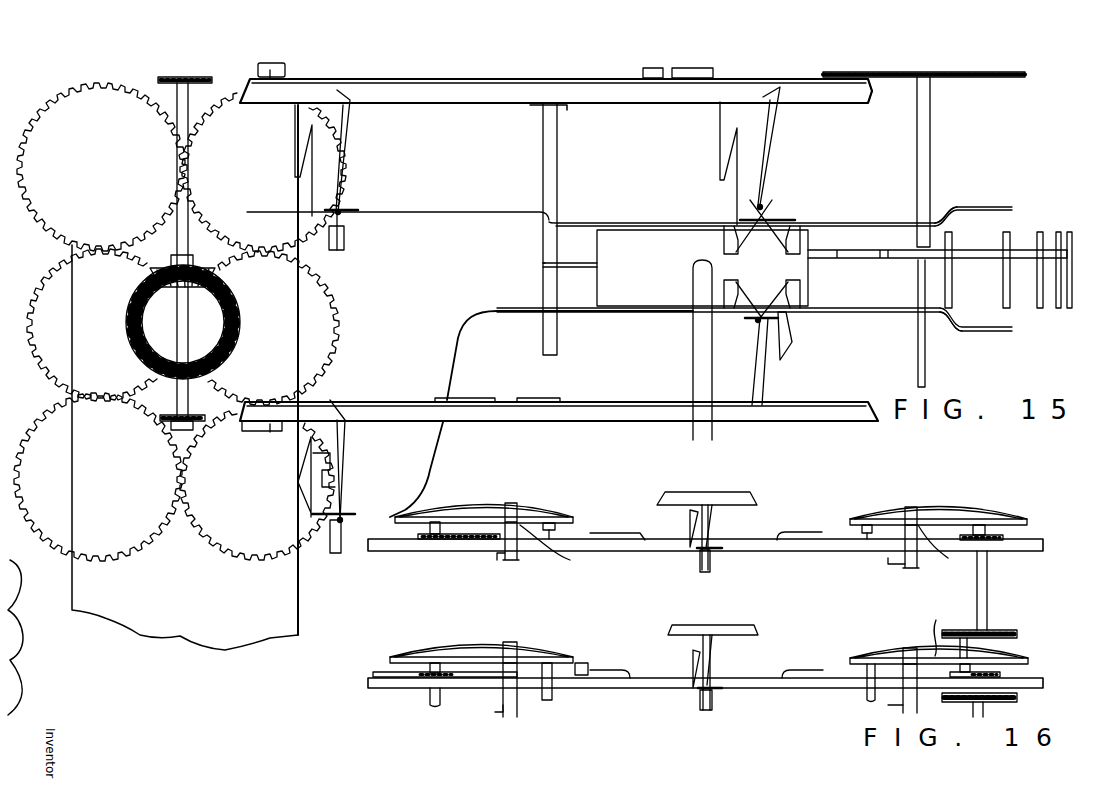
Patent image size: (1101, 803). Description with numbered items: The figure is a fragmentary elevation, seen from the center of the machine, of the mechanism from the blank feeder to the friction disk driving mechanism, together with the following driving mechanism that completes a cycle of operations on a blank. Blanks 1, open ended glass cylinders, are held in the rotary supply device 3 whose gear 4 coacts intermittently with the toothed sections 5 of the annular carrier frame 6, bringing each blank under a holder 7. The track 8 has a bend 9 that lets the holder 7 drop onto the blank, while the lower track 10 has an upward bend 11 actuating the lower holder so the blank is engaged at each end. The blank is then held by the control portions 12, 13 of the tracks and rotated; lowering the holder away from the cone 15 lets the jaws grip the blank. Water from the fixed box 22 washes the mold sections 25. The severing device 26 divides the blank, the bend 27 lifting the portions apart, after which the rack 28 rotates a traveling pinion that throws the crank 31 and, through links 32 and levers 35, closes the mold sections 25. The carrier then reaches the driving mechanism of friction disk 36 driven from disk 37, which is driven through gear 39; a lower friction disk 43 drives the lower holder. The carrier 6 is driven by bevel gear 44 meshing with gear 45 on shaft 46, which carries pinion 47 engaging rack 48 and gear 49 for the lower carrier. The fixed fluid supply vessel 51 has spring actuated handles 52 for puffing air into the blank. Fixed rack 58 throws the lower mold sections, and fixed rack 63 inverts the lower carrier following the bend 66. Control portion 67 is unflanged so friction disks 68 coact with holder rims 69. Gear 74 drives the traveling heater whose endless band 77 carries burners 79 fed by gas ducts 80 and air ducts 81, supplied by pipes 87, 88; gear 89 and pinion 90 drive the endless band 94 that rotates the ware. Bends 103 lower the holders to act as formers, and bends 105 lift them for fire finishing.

In FIG. 15, the blank 1 is at (1057, 228).
In FIG. 15, the rotary supply device 3 is at (967, 248).
In FIG. 15, the gear 4 is at (972, 78).
In FIG. 15, the toothed section 5 is at (710, 68).
In FIG. 15, the annular carrier frame 6 is at (828, 105).
In FIG. 16, the annular carrier frame 6 is at (733, 507).
In FIG. 15, the holder 7 is at (597, 245).
In FIG. 15, the track 8 is at (977, 203).
In FIG. 15, the bend 9 is at (944, 207).
In FIG. 15, the lower track 10 is at (975, 328).
In FIG. 15, the upward bend 11 is at (943, 327).
In FIG. 15, the control portion 12 is at (618, 220).
In FIG. 15, the control portion 13 is at (853, 308).
In FIG. 15, the cone 15 is at (340, 205).
In FIG. 15, the box 22 is at (645, 70).
In FIG. 15, the mold section 25 is at (786, 262).
In FIG. 16, the mold section 25 is at (715, 573).
In FIG. 15, the severing device 26 is at (580, 268).
In FIG. 15, the bend 27 is at (557, 213).
In FIG. 15, the rack 28 is at (567, 107).
In FIG. 15, the crank 31 is at (344, 93).
In FIG. 15, the link 32 is at (349, 120).
In FIG. 16, the link 32 is at (710, 515).
In FIG. 15, the lever 35 is at (785, 238).
In FIG. 15, the friction disk 36 is at (293, 248).
In FIG. 15, the friction disk 37 is at (133, 246).
In FIG. 15, the gear 39 is at (337, 297).
In FIG. 15, the friction disk 43 is at (152, 543).
In FIG. 15, the bevel gear 44 is at (245, 312).
In FIG. 15, the gear 45 is at (213, 268).
In FIG. 15, the shaft 46 is at (188, 233).
In FIG. 15, the pinion 47 is at (207, 75).
In FIG. 15, the rack 48 is at (447, 76).
In FIG. 15, the gear 49 is at (197, 417).
In FIG. 15, the fixed fluid supply vessel 51 is at (286, 63).
In FIG. 15, the spring actuated handle 52 is at (272, 77).
In FIG. 15, the fixed rack 58 is at (556, 398).
In FIG. 15, the fixed rack 63 is at (473, 397).
In FIG. 15, the bend 66 is at (448, 368).
In FIG. 15, the control portion 67 is at (440, 210).
In FIG. 15, the friction disk 68 is at (302, 190).
In FIG. 16, the friction disk 68 is at (693, 540).
In FIG. 15, the holder rim 69 is at (358, 208).
In FIG. 16, the holder rim 69 is at (720, 550).
In FIG. 16, the gear 74 is at (1012, 630).
In FIG. 16, the endless band 77 is at (553, 553).
In FIG. 16, the burner 79 is at (395, 520).
In FIG. 16, the flexible gas duct 80 is at (516, 503).
In FIG. 16, the air duct 81 is at (478, 508).
In FIG. 16, the pipe 87 is at (520, 558).
In FIG. 16, the pipe 88 is at (497, 558).
In FIG. 16, the gear 89 is at (457, 548).
In FIG. 16, the pinion 90 is at (440, 532).
In FIG. 16, the endless band 94 is at (1043, 555).
In FIG. 16, the bend 103 is at (778, 538).
In FIG. 16, the bend 105 is at (607, 551).